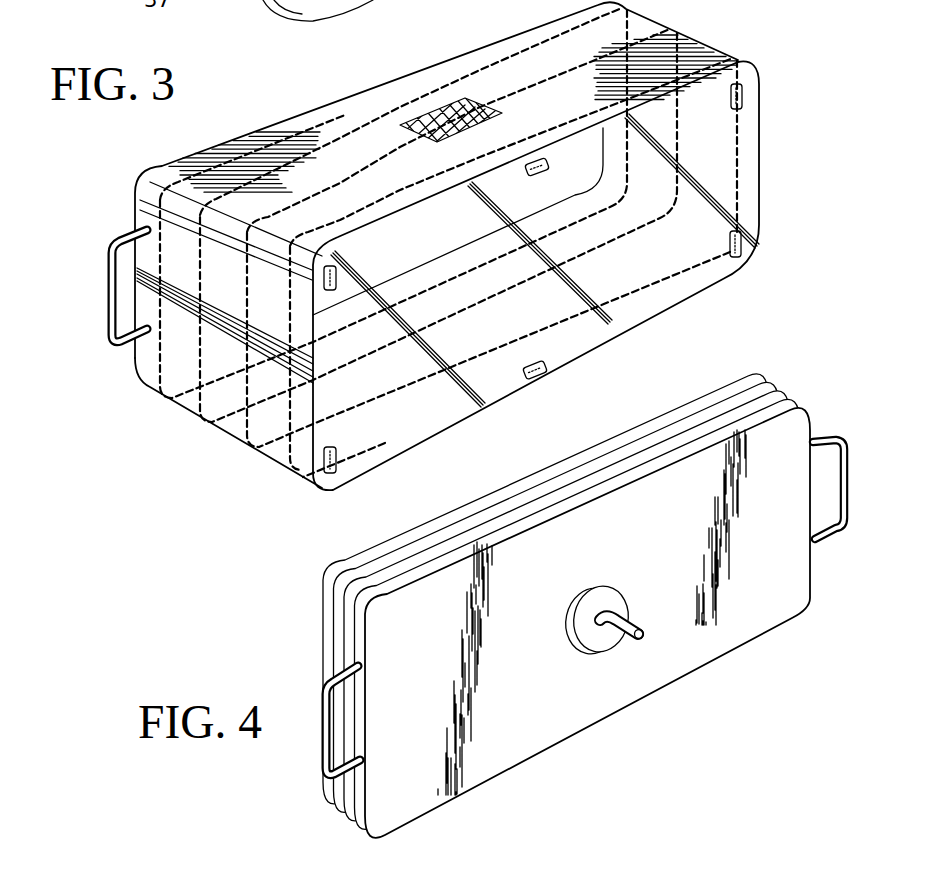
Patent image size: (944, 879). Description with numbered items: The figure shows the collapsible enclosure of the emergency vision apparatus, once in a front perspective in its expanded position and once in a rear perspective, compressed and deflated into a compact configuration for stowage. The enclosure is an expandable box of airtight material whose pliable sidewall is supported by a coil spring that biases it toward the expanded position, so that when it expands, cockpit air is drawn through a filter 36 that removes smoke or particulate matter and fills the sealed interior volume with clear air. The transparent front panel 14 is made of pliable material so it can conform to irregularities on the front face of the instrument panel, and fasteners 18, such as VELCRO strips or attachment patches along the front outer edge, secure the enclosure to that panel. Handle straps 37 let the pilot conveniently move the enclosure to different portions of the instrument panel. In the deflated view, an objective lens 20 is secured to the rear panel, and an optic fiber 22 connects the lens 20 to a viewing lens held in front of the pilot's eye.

In FIG. 3, the transparent front panel 14 is at (722, 157).
In FIG. 3, the fasteners 18 is at (547, 377).
In FIG. 3, the filter 36 is at (441, 112).
In FIG. 3, the handle straps 37 is at (108, 300).
In FIG. 4, the handle straps 37 is at (322, 760).
In FIG. 4, the objective lens 20 is at (587, 640).
In FIG. 4, the optic fiber 22 is at (629, 638).